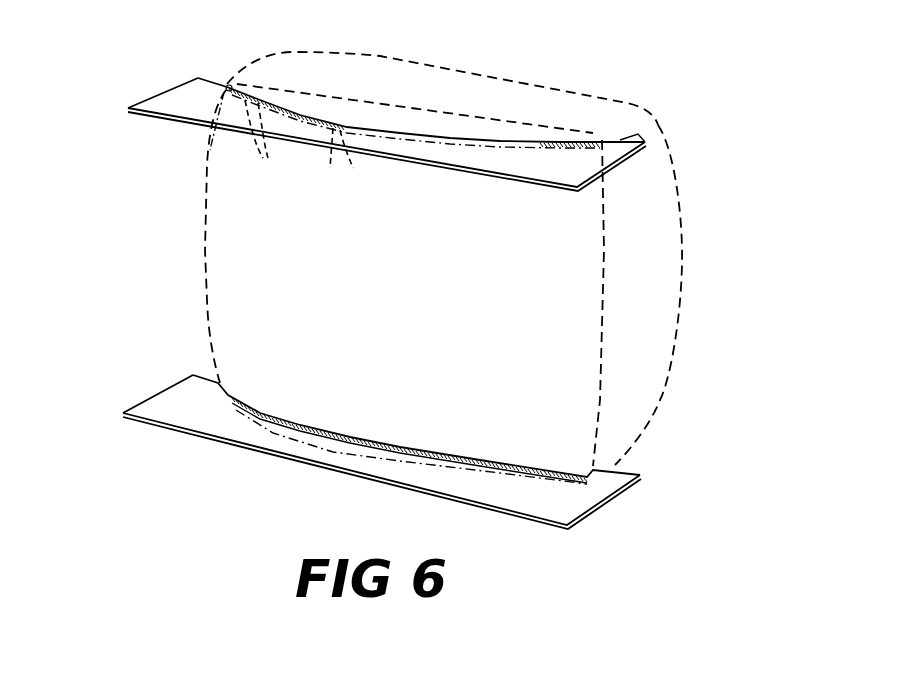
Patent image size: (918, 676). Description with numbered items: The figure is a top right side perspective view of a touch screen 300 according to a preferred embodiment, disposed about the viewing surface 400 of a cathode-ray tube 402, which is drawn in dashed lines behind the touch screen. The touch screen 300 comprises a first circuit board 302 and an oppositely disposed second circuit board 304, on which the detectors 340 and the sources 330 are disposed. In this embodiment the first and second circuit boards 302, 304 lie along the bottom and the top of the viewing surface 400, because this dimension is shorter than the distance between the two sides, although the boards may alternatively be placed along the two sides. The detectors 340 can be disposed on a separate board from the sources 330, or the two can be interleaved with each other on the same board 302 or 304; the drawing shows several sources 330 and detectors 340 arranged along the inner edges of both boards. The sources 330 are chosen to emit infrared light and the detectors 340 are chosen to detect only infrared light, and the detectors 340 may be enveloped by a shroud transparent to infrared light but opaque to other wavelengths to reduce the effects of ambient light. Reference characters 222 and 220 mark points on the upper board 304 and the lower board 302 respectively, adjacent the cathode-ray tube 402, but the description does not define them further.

The touch screen 300 is at (177, 262).
The second circuit board 304 is at (619, 140).
The first circuit board 302 is at (574, 501).
The upper edge 222 is at (227, 84).
The lower edge 220 is at (598, 467).
The sources 330 is at (445, 460).
The detectors 340 is at (210, 128).
The viewing surface 400 is at (523, 367).
The cathode-ray tube 402 is at (633, 320).